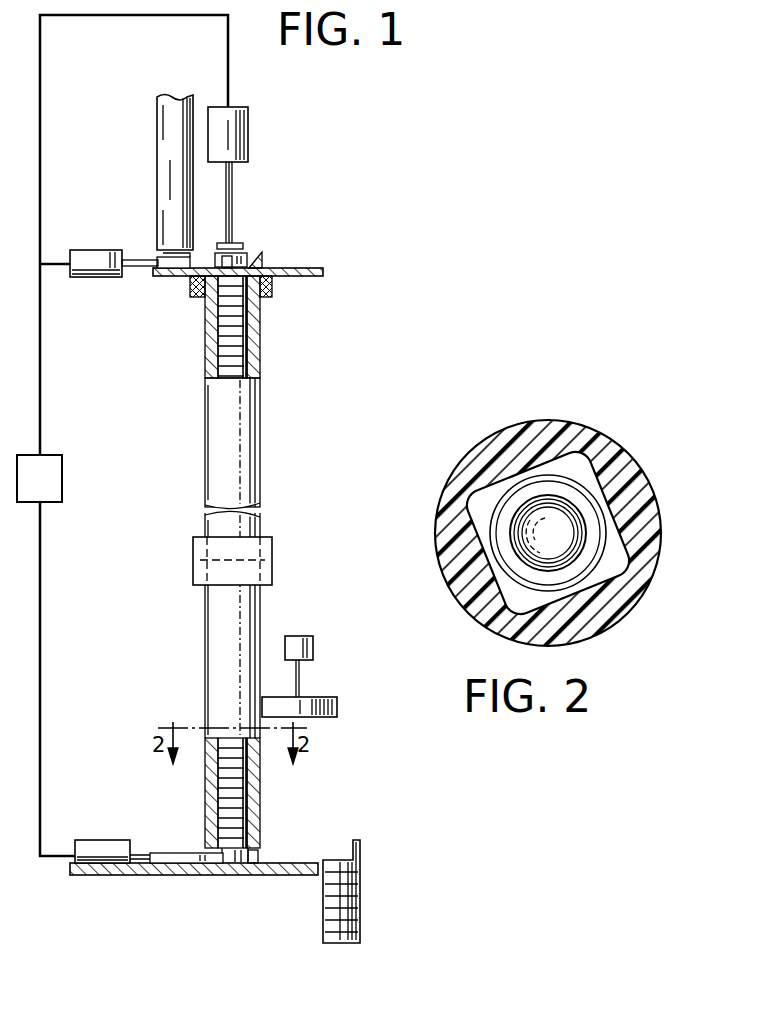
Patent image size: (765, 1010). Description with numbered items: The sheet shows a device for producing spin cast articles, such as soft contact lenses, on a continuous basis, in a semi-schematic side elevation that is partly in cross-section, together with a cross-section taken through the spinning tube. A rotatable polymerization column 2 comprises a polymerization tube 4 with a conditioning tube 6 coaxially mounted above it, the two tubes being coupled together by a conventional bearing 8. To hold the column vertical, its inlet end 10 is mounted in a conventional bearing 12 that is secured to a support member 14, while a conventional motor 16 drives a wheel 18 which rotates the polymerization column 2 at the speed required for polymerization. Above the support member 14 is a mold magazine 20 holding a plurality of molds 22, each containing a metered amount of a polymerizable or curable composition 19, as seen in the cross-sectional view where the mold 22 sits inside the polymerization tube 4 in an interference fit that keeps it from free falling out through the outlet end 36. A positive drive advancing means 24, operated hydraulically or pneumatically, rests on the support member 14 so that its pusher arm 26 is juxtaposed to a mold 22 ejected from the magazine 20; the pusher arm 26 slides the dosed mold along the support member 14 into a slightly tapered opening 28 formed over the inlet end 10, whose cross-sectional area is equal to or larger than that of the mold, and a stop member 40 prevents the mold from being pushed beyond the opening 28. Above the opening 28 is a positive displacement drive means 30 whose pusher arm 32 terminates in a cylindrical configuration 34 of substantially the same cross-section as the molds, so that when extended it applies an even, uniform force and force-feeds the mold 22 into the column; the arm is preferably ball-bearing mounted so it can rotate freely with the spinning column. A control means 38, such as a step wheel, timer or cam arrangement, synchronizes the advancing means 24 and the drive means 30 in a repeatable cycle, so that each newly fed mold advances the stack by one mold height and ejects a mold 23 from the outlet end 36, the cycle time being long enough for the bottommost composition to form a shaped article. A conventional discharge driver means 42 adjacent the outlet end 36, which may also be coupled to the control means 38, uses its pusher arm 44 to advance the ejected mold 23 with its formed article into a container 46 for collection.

In FIG. 1, the polymerization column 2 is at (272, 455).
In FIG. 1, the polymerization tube 4 is at (214, 705).
In FIG. 2, the polymerization tube 4 is at (604, 588).
In FIG. 1, the conditioning tube 6 is at (261, 394).
In FIG. 1, the bearing 8 is at (272, 550).
In FIG. 1, the inlet end 10 is at (224, 272).
In FIG. 1, the bearing 12 is at (268, 297).
In FIG. 1, the support member 14 is at (316, 268).
In FIG. 1, the motor 16 is at (304, 636).
In FIG. 1, the wheel 18 is at (334, 697).
In FIG. 2, the polymerizable or curable composition 19 is at (518, 545).
In FIG. 1, the mold magazine 20 is at (164, 156).
In FIG. 1, the mold 22 is at (166, 257).
In FIG. 2, the mold 22 is at (608, 528).
In FIG. 1, the ejected mold 23 is at (256, 860).
In FIG. 1, the positive drive advancing means 24 is at (100, 252).
In FIG. 1, the pusher arm 26 is at (138, 268).
In FIG. 1, the tapered opening 28 is at (247, 258).
In FIG. 1, the positive displacement drive means 30 is at (238, 123).
In FIG. 1, the pusher arm 32 is at (232, 207).
In FIG. 1, the cylindrical configuration 34 is at (222, 242).
In FIG. 1, the outlet end 36 is at (262, 842).
In FIG. 1, the control means 38 is at (62, 462).
In FIG. 1, the stop member 40 is at (258, 260).
In FIG. 1, the discharge driver means 42 is at (145, 845).
In FIG. 1, the pusher arm 44 is at (195, 855).
In FIG. 1, the container 46 is at (362, 872).